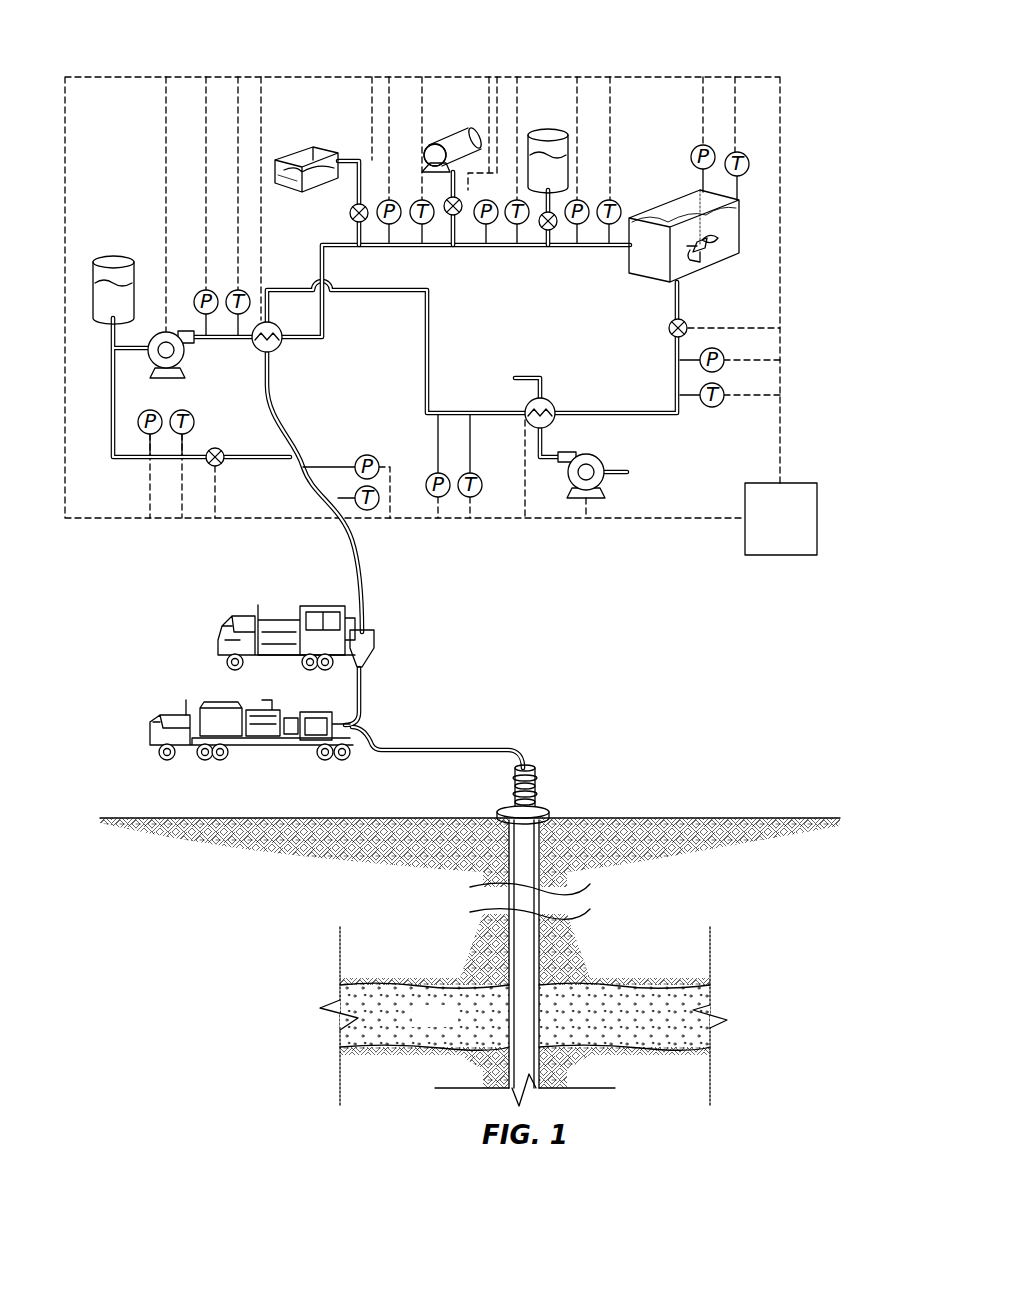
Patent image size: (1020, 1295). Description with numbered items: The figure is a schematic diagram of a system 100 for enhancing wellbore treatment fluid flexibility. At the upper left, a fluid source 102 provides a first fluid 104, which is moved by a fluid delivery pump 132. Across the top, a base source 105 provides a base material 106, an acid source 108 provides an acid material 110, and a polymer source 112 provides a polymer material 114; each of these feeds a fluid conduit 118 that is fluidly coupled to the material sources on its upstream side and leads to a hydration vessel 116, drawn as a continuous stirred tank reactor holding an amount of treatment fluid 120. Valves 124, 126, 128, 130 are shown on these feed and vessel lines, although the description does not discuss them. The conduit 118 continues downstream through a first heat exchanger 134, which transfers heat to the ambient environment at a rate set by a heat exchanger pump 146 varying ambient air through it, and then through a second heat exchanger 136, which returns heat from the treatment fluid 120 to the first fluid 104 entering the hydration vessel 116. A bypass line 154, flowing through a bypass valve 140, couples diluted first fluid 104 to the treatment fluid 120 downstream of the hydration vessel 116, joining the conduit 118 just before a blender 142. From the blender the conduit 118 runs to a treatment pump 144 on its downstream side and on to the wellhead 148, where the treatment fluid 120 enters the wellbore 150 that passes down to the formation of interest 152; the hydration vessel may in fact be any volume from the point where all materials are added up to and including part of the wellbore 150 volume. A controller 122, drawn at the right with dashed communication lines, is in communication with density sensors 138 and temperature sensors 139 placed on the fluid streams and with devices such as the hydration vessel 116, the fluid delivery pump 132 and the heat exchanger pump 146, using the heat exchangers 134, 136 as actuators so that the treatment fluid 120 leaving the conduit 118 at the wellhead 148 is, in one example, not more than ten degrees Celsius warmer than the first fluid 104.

The system 100 is at (727, 52).
The fluid source 102 is at (120, 262).
The first fluid 104 is at (113, 303).
The base source 105 is at (308, 146).
The base material 106 is at (290, 186).
The acid source 108 is at (462, 121).
The acid material 110 is at (432, 155).
The polymer source 112 is at (556, 135).
The polymer material 114 is at (548, 178).
The hydration vessel 116 is at (740, 228).
The fluid conduit 118 is at (430, 362).
The treatment fluid 120 is at (633, 263).
The controller 122 is at (441, 316).
The valve 124 is at (668, 326).
The valve 126 is at (349, 215).
The valve 128 is at (452, 225).
The valve 130 is at (548, 235).
The fluid delivery pump 132 is at (187, 348).
The first heat exchanger 134 is at (548, 399).
The second heat exchanger 136 is at (283, 345).
The density sensor 138 is at (691, 157).
The temperature sensor 139 is at (750, 164).
The bypass valve 140 is at (220, 449).
The blender 142 is at (236, 633).
The treatment pump 144 is at (170, 721).
The heat exchanger pump 146 is at (585, 456).
The wellhead 148 is at (540, 786).
The wellbore 150 is at (506, 956).
The formation of interest 152 is at (525, 1016).
The bypass line 154 is at (193, 462).